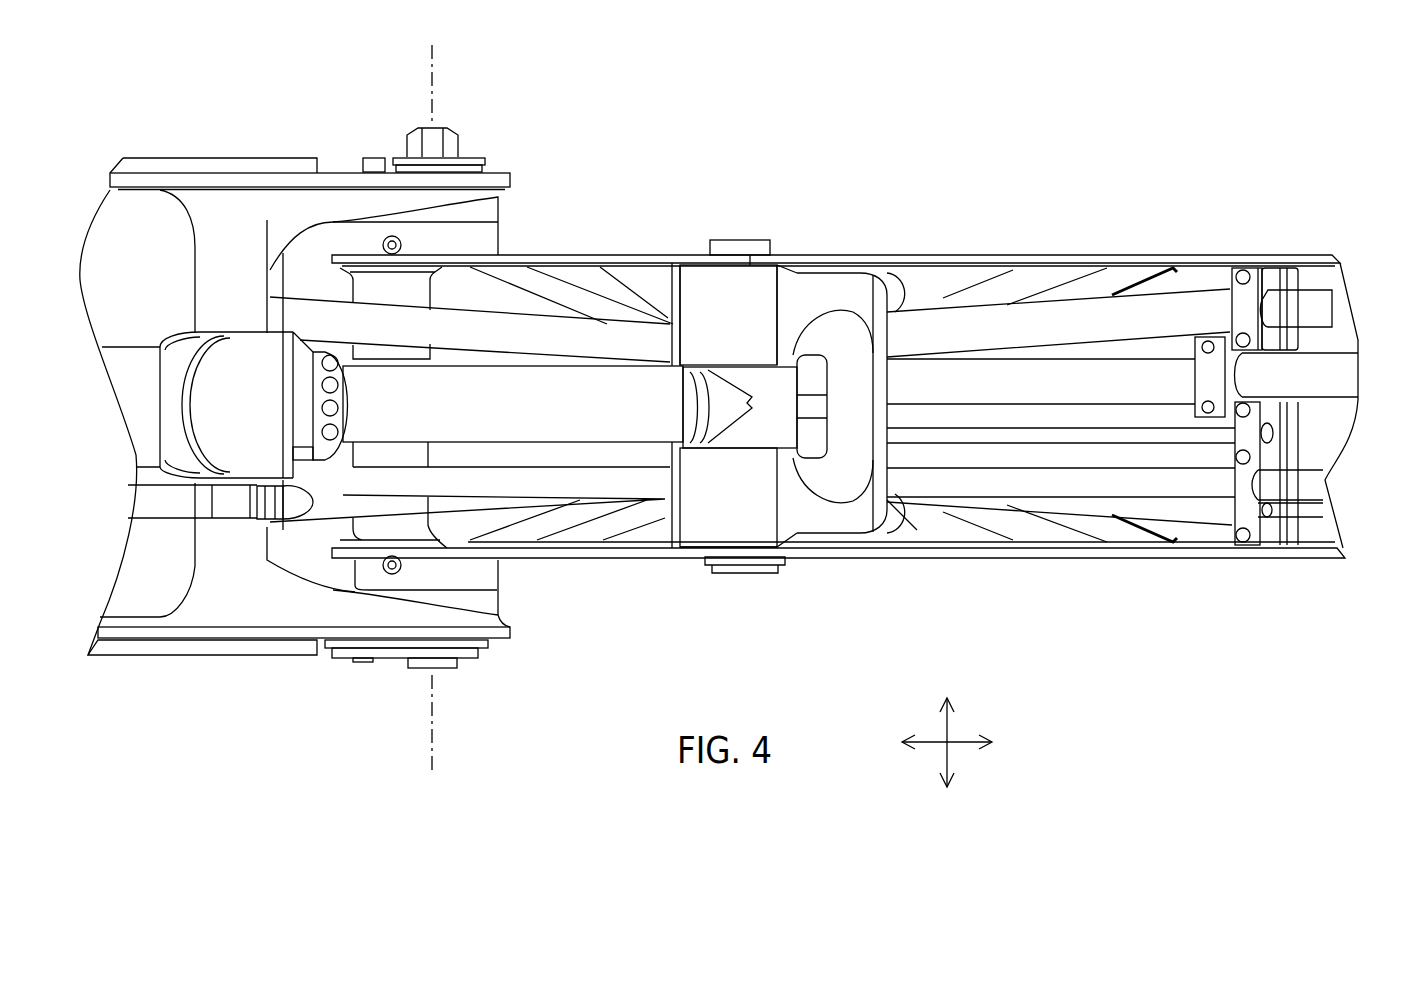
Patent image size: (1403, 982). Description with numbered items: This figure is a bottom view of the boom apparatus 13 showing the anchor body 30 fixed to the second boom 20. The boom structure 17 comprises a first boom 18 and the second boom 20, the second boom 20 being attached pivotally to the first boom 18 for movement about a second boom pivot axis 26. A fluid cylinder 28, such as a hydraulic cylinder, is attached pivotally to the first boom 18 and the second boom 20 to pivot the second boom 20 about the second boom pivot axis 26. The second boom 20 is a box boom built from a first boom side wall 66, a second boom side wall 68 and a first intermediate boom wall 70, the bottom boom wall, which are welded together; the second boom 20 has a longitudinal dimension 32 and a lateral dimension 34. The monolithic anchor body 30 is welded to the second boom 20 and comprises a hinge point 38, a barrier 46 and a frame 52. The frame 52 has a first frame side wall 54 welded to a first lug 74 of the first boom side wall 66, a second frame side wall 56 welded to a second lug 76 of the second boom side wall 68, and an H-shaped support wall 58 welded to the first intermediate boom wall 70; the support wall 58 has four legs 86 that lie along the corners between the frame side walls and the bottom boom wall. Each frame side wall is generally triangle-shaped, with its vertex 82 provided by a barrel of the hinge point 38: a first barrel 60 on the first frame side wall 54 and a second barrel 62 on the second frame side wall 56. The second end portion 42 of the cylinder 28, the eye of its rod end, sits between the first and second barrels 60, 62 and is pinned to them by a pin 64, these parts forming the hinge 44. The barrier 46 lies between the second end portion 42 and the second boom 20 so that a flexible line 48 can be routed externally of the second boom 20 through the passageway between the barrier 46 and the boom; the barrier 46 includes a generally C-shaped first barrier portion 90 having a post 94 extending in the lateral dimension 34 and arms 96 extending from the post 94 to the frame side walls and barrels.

The boom apparatus 13 is at (691, 150).
The boom structure 17 is at (621, 605).
The first boom 18 is at (335, 172).
The second boom 20 is at (1062, 240).
The second boom pivot axis 26 is at (436, 722).
The fluid cylinder 28 is at (158, 405).
The anchor body 30 is at (945, 276).
The first, longitudinal dimension 32 is at (960, 742).
The second, lateral dimension 34 is at (940, 758).
The hinge point 38 is at (742, 290).
The second end portion 42 is at (767, 432).
The hinge 44 is at (655, 285).
The barrier 46 is at (905, 455).
The flexible line 48 is at (1100, 372).
The frame 52 is at (975, 532).
The first frame side wall 54 is at (917, 530).
The second frame side wall 56 is at (998, 270).
The support wall 58 is at (963, 420).
The first barrel 60 is at (698, 298).
The second barrel 62 is at (700, 497).
The pin 64 is at (758, 262).
The first boom side wall 66 is at (1143, 270).
The second boom side wall 68 is at (1084, 560).
The first intermediate boom wall 70 is at (1208, 282).
The first lug 74 is at (688, 262).
The second lug 76 is at (720, 543).
The vertex 82 is at (735, 238).
The legs 86 is at (528, 278).
The first barrier portion 90 is at (844, 394).
The post 94 is at (862, 410).
The arm 96 is at (832, 329).